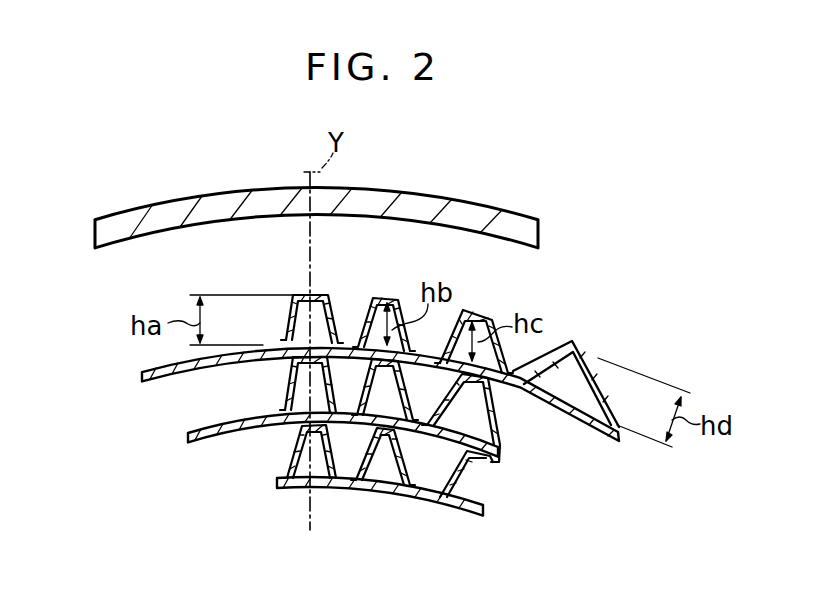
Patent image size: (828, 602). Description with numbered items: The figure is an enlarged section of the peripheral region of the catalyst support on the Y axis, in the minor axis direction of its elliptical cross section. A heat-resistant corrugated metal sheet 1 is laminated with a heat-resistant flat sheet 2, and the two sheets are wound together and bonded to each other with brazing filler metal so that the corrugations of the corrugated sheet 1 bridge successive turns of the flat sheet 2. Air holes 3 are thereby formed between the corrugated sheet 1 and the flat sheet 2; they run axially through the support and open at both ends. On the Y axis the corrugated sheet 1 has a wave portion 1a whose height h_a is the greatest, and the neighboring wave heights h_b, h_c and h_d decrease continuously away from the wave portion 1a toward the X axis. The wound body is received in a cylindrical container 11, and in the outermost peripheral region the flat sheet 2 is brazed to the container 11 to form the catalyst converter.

The heat-resistant corrugated metal sheet 1 is at (287, 457).
The wave portion 1a is at (322, 292).
The heat-resistant flat sheet 2 is at (203, 442).
The air holes 3 is at (496, 425).
The cylindrical container 11 is at (487, 217).